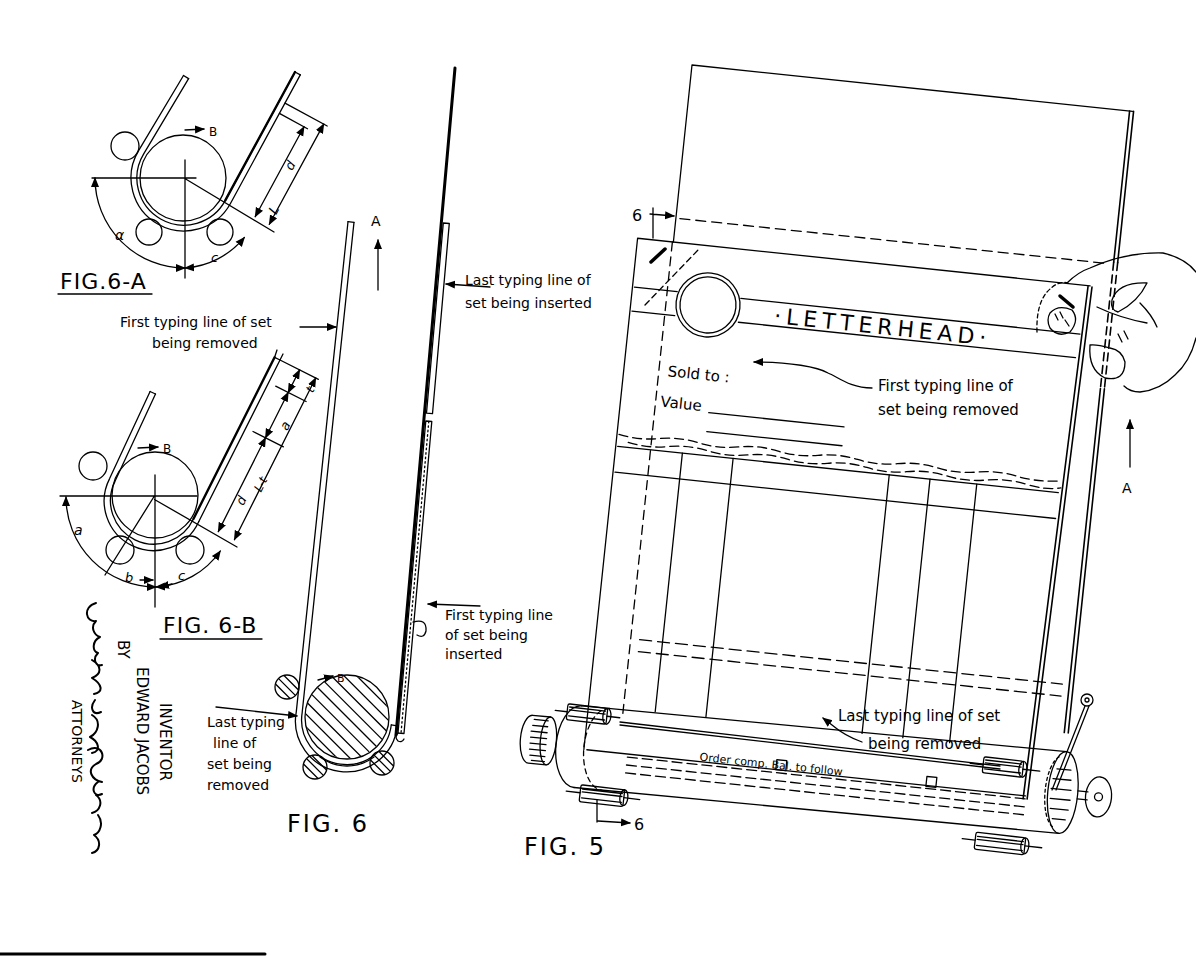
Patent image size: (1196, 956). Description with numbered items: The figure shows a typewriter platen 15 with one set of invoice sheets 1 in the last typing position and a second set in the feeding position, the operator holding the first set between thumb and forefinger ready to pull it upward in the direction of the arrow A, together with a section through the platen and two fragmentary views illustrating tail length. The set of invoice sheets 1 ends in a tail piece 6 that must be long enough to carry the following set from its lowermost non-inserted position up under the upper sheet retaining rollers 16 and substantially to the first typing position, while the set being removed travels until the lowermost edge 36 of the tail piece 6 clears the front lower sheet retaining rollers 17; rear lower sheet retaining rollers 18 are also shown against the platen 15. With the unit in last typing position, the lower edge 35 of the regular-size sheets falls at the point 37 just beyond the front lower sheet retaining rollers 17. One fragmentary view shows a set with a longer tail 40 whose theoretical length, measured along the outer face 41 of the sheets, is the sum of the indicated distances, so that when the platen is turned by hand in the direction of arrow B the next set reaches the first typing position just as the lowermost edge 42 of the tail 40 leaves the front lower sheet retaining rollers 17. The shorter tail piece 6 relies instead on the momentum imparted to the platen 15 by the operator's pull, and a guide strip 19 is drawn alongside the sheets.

In FIG. 6, the set of invoice sheets 1 is at (333, 453).
In FIG. 5, the tail piece 6 is at (1138, 176).
In FIG. 6, the platen 15 is at (343, 689).
In FIG. 5, the platen 15 is at (1082, 772).
In FIG. 6, the upper sheet retaining rollers 16 is at (288, 674).
In FIG. 6, the front lower sheet retaining rollers 17 is at (304, 779).
In FIG. 6, the rear lower sheet retaining rollers 18 is at (389, 775).
In FIG. 6, the guide strip 19 is at (409, 678).
In FIG. 5, the guide strip 19 is at (1092, 698).
In FIG. 6, the lower edge of the regular size invoice sheets 35 is at (347, 767).
In FIG. 6, the lowermost edge of the tail piece 36 is at (411, 609).
In FIG. 6-A, the point beyond the front lower sheet retaining rollers 37 is at (181, 233).
In FIG. 6-B, the point beyond the front lower sheet retaining rollers 37 is at (147, 545).
In FIG. 6-B, the tail 40 is at (237, 449).
In FIG. 6-B, the outer face of the invoice sheets 41 is at (108, 516).
In FIG. 6-B, the lowermost edge of the tail 42 is at (288, 364).